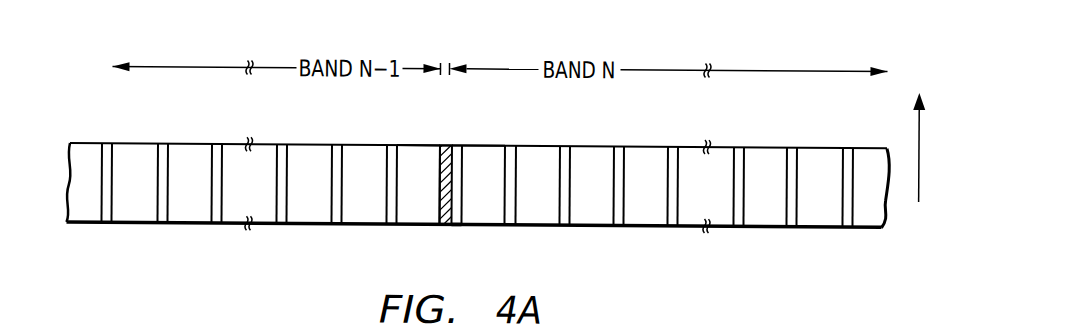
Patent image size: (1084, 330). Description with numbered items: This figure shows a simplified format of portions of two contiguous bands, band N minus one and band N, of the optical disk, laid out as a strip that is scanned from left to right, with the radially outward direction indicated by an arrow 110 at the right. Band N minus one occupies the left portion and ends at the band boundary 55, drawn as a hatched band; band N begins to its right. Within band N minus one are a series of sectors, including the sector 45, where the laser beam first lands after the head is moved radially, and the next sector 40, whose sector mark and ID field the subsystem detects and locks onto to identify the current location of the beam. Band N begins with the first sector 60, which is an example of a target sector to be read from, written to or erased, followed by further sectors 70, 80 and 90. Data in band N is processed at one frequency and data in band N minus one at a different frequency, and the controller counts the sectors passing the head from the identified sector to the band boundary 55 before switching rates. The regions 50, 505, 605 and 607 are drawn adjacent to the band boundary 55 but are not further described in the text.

The sector 40 is at (188, 222).
The sector 45 is at (135, 222).
The track region 50 is at (412, 222).
The band boundary 55 is at (442, 222).
The first sector 60 is at (485, 222).
The track region 70 is at (537, 222).
The track region 80 is at (593, 222).
The track region 90 is at (822, 224).
The arrow 110 is at (920, 182).
The last track of band N-1 505 is at (408, 148).
The band boundary region 605 is at (457, 148).
The first track of band N 607 is at (493, 147).